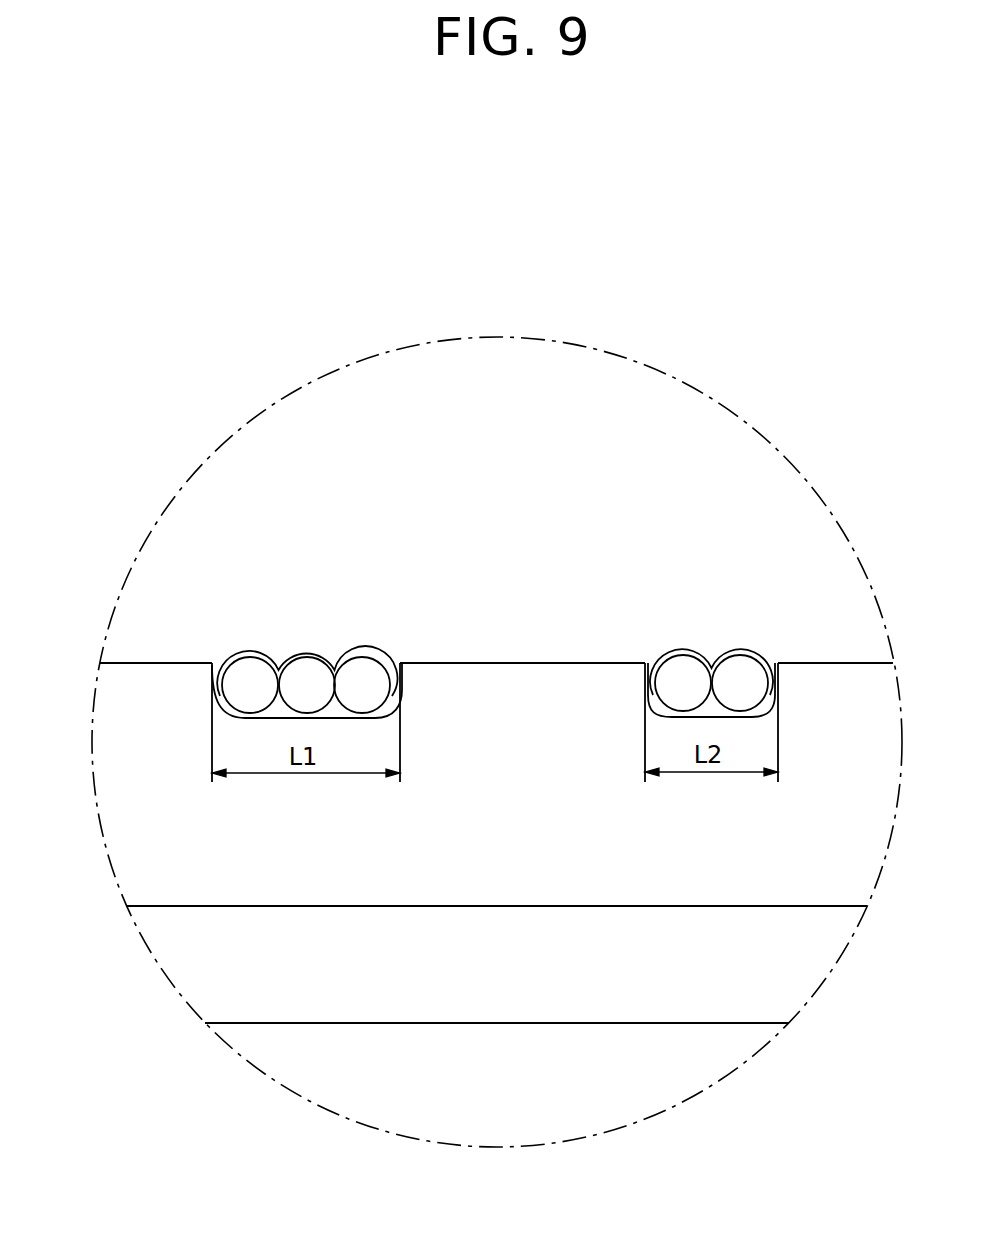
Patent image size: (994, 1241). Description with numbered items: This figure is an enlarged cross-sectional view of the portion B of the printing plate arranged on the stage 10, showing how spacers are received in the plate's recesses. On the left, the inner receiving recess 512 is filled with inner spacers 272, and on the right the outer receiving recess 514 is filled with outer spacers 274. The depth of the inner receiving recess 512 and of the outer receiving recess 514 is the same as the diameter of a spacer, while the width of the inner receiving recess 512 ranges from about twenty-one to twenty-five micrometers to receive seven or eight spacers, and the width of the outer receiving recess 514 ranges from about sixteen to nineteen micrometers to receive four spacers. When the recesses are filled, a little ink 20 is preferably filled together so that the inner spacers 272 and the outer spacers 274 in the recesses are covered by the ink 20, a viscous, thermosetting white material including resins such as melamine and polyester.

The stage 10 is at (200, 957).
The ink 20 is at (250, 660).
The inner spacers 272 is at (309, 675).
The outer spacers 274 is at (737, 672).
The inner receiving recess 512 is at (406, 663).
The outer receiving recess 514 is at (646, 700).
The portion B is at (496, 337).